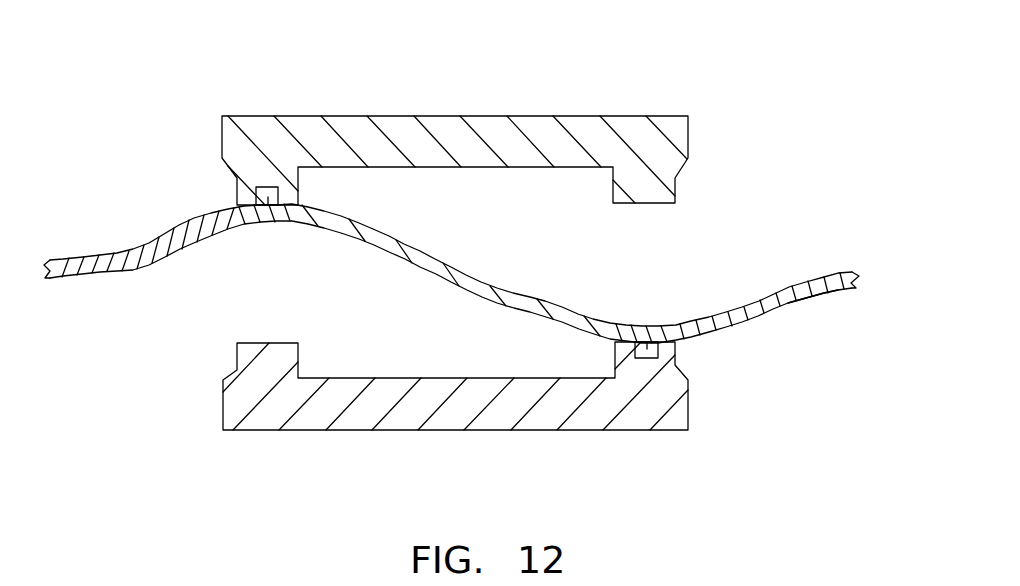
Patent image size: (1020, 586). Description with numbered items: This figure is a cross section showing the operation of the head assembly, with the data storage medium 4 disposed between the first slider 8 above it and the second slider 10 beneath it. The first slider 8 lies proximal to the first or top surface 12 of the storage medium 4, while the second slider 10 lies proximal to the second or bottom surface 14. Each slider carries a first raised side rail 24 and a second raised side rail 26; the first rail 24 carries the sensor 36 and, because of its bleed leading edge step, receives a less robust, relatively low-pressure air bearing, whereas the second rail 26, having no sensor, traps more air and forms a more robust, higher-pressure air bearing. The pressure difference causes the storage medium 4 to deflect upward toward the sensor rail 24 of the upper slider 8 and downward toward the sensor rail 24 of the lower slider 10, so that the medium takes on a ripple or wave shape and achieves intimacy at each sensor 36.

The data storage medium 4 is at (840, 277).
The first slider 8 is at (533, 137).
The second slider 10 is at (550, 410).
The first surface 12 is at (497, 272).
The second surface 14 is at (815, 299).
The first raised side rail 24 is at (240, 195).
The second raised side rail 26 is at (658, 193).
The sensor 36 is at (268, 198).